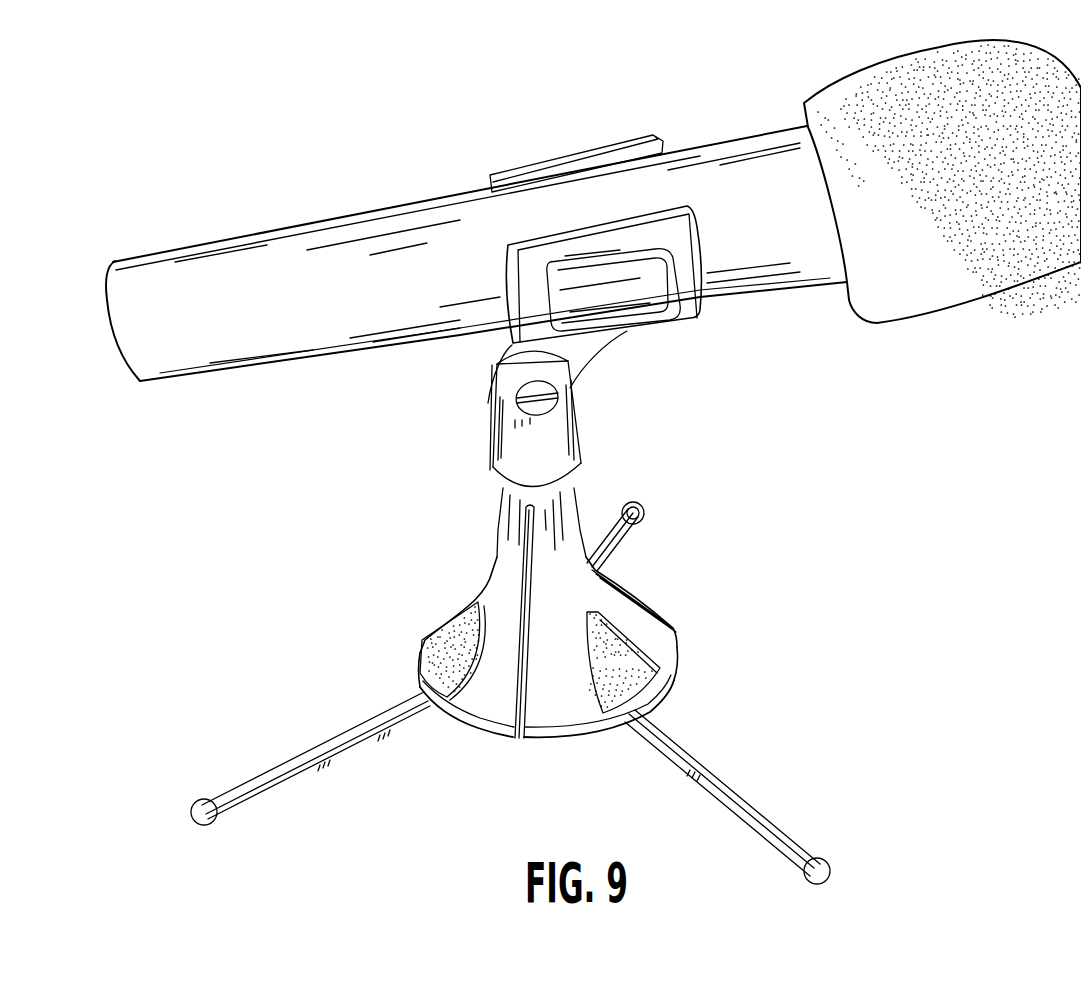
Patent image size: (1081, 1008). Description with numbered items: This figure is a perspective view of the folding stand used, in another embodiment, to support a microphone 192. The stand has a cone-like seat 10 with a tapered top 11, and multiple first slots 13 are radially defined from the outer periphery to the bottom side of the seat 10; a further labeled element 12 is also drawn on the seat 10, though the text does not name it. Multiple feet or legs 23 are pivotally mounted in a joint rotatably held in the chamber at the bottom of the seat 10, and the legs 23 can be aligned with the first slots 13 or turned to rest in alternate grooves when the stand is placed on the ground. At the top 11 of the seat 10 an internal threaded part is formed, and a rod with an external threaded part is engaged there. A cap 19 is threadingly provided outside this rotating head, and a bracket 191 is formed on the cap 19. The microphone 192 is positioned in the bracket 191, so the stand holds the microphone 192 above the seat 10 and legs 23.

The microphone 192 is at (775, 153).
The bracket 191 is at (698, 318).
The cap 19 is at (562, 447).
The tapered top 11 is at (563, 505).
The cone-like seat 10 is at (663, 642).
The recess in base 12 is at (642, 682).
The first slots 13 is at (525, 697).
The feet 23 is at (725, 787).